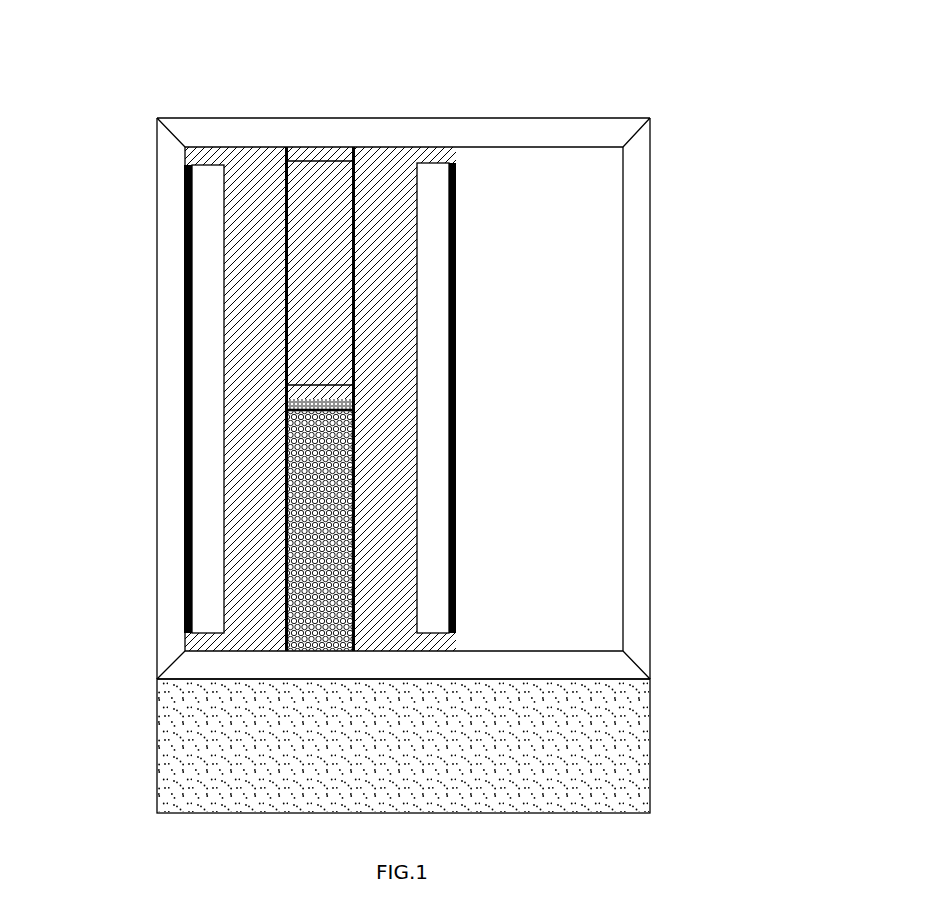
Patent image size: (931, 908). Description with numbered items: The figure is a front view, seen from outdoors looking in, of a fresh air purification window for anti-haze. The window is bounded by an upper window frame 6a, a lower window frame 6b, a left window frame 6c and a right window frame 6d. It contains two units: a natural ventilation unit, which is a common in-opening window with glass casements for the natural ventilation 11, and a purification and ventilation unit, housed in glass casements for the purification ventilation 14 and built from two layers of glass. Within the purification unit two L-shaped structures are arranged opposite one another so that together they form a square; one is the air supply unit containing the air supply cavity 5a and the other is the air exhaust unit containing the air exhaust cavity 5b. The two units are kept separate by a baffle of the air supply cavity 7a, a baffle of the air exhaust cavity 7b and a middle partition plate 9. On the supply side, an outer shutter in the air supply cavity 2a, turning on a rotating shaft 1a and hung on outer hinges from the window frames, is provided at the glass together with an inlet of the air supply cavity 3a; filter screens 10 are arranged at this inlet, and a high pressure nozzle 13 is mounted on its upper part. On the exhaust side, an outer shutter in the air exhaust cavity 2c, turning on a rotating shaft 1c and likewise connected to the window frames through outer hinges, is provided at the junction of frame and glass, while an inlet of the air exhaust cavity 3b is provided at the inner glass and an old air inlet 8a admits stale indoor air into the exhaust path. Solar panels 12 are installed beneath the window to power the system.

The rotating shaft for the outer shutter in the air supply cavity 1a is at (185, 442).
The rotating shaft for the outer shutter in the air exhaust cavity 1c is at (455, 163).
The outer shutter in the air supply cavity 2a is at (205, 228).
The outer shutter in the air exhaust cavity 2c is at (428, 177).
The inlet of the air supply cavity 3a is at (354, 160).
The inlet of the air exhaust cavity 3b is at (285, 508).
The air supply cavity 5a is at (247, 290).
The air exhaust cavity 5b is at (383, 348).
The upper window frame 6a is at (545, 133).
The lower window frame 6b is at (208, 672).
The left window frame 6c is at (175, 483).
The right window frame 6d is at (637, 410).
The baffle of the air supply cavity 7a is at (284, 186).
The baffle of the air exhaust cavity 7b is at (353, 508).
The old air inlet 8a is at (318, 180).
The middle partition plate 9 is at (358, 392).
The filter screens 10 is at (285, 547).
The glass casements for the natural ventilation 11 is at (578, 297).
The solar panels 12 is at (588, 690).
The high pressure nozzle 13 is at (283, 403).
The glass casements for the purification ventilation 14 is at (302, 172).